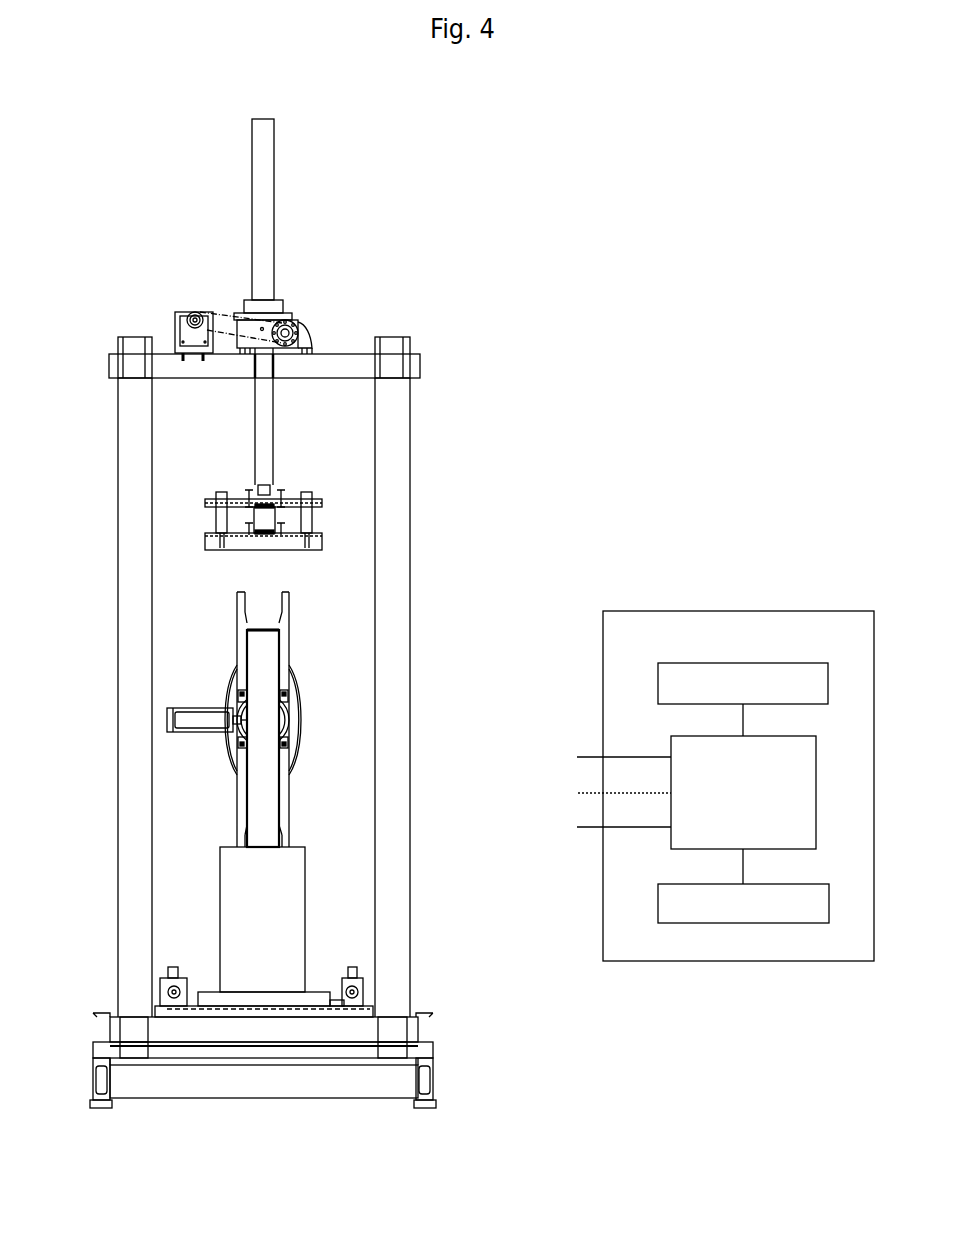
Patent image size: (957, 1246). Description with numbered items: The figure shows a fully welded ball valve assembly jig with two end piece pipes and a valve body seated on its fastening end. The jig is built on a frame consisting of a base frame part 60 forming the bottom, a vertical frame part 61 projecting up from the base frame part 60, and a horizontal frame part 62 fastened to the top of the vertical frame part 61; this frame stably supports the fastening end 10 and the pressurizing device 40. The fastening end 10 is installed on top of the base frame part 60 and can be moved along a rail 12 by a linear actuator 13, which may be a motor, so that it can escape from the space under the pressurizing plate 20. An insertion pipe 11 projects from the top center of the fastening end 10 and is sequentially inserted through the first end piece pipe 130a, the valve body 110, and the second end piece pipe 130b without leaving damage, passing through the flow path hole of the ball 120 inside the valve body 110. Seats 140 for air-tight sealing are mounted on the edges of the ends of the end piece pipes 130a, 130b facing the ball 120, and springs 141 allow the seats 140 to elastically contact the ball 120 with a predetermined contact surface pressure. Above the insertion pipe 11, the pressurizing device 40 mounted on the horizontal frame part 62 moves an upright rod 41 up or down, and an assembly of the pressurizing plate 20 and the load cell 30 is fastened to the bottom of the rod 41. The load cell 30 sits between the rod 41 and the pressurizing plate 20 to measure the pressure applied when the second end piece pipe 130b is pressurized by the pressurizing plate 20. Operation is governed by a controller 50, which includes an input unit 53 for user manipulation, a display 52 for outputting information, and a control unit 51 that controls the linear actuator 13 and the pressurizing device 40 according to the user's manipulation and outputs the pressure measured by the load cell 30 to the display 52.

The fastening end 10 is at (306, 890).
The insertion pipe 11 is at (262, 803).
The rail 12 is at (334, 1007).
The linear actuator 13 is at (380, 969).
The pressurizing plate 20 is at (322, 540).
The load cell 30 is at (277, 515).
The pressurizing device 40 is at (282, 264).
The rod 41 is at (276, 450).
The controller 50 is at (737, 611).
The control unit 51 is at (816, 760).
The display 52 is at (822, 663).
The input unit 53 is at (787, 923).
The base frame part 60 is at (109, 1023).
The vertical frame part 61 is at (118, 450).
The horizontal frame part 62 is at (188, 379).
The valve body 110 is at (236, 670).
The ball 120 is at (292, 722).
The first end piece pipe 130a is at (237, 793).
The second end piece pipe 130b is at (237, 632).
The seat 140 is at (287, 697).
The spring 141 is at (290, 690).